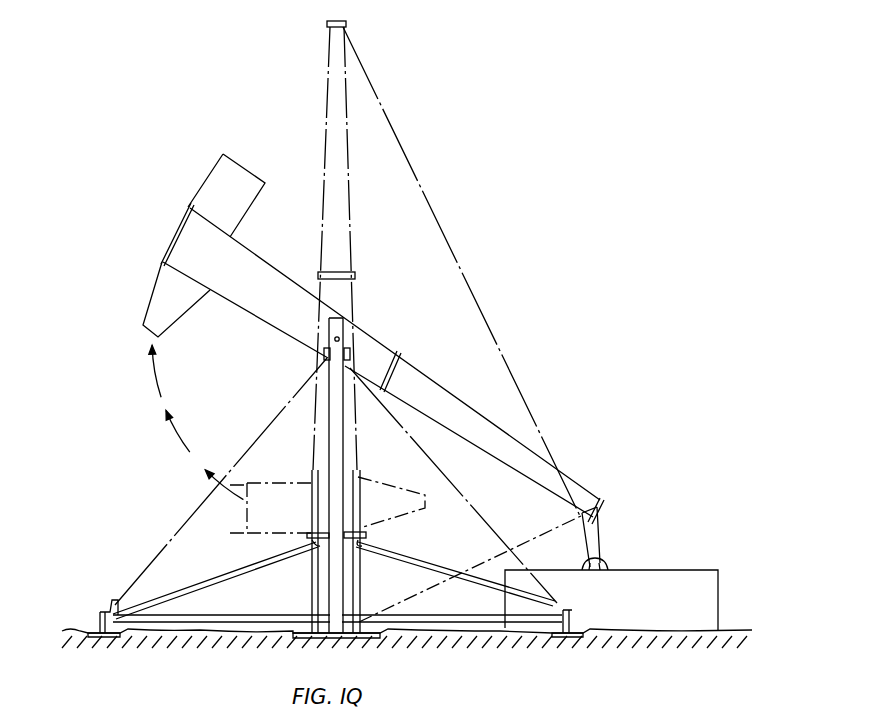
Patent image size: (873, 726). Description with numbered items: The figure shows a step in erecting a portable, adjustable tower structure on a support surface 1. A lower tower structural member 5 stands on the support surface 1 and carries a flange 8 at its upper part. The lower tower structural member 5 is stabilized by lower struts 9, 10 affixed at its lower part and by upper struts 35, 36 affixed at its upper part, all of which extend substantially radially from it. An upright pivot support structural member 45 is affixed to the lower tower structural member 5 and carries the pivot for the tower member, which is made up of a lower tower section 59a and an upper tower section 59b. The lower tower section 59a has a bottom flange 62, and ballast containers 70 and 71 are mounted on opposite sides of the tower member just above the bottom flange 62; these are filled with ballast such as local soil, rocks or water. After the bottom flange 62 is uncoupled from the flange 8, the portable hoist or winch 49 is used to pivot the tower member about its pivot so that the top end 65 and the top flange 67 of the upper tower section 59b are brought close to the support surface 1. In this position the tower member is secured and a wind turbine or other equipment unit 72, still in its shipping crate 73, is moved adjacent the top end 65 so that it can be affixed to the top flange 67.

The support surface 1 is at (70, 626).
The lower tower structural member 5 is at (350, 581).
The flange 8 is at (363, 538).
The lower strut 9 is at (212, 637).
The lower strut 10 is at (466, 636).
The upper strut 35 is at (205, 573).
The upper strut 36 is at (473, 592).
The pivot support structural member 45 is at (344, 450).
The portable hoist or winch 49 is at (605, 560).
The lower tower section 59a is at (240, 298).
The upper tower section 59b is at (354, 256).
The bottom flange 62 is at (175, 232).
The top end 65 is at (588, 500).
The top flange 67 is at (600, 512).
The ballast container 70 is at (237, 173).
The ballast container 71 is at (150, 313).
The wind turbine or equipment unit 72 is at (668, 598).
The shipping crate 73 is at (700, 570).